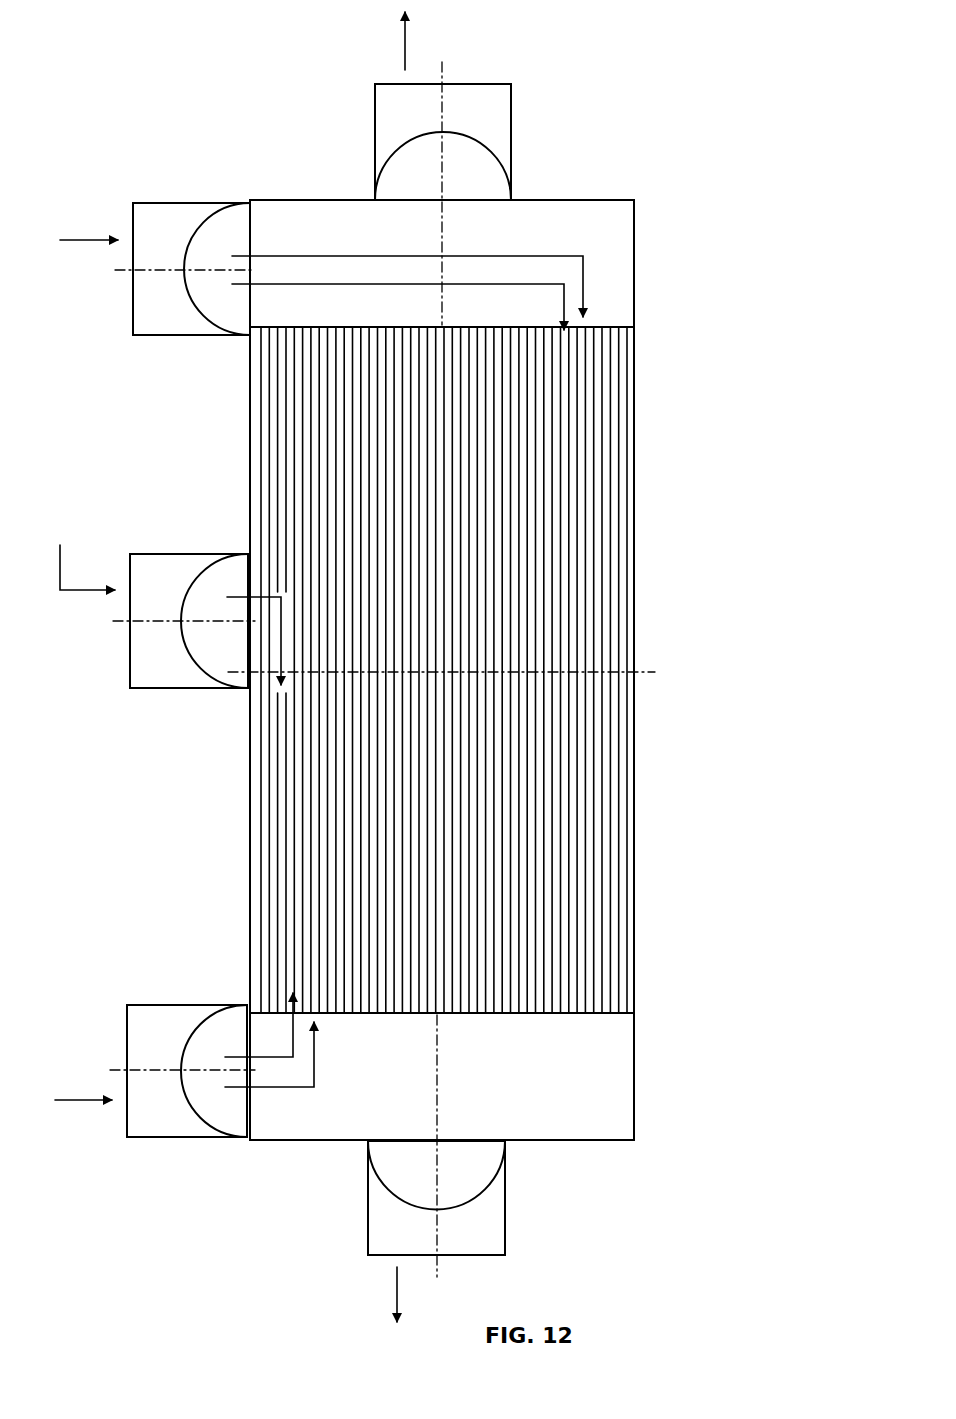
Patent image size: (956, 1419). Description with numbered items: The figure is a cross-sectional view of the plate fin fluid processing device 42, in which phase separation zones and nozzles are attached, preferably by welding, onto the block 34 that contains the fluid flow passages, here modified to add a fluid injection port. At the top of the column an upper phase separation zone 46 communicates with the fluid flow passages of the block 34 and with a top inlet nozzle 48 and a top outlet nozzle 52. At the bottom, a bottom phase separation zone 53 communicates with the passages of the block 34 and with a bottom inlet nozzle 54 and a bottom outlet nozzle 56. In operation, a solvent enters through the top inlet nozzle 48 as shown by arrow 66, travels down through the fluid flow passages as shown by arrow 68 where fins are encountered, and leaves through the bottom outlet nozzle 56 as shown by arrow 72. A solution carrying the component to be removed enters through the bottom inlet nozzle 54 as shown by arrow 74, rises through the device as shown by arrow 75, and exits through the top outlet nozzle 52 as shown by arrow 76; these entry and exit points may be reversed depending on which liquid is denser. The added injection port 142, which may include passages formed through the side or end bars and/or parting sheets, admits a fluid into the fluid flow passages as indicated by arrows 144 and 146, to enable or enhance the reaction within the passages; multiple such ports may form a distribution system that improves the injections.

The block 34 is at (247, 448).
The plate fin device 42 is at (648, 455).
The upper phase separation zone 46 is at (636, 243).
The top inlet nozzle 48 is at (195, 326).
The top outlet nozzle 52 is at (497, 143).
The bottom phase separation zone 53 is at (637, 1087).
The bottom inlet nozzle 54 is at (197, 1012).
The bottom outlet nozzle 56 is at (497, 1185).
The arrow 66 is at (85, 238).
The arrow 68 is at (320, 252).
The arrow 72 is at (397, 1290).
The arrow 74 is at (83, 1103).
The arrow 75 is at (273, 1090).
The arrow 76 is at (402, 48).
The injection port 142 is at (170, 690).
The arrow 144 is at (75, 595).
The arrow 146 is at (232, 595).